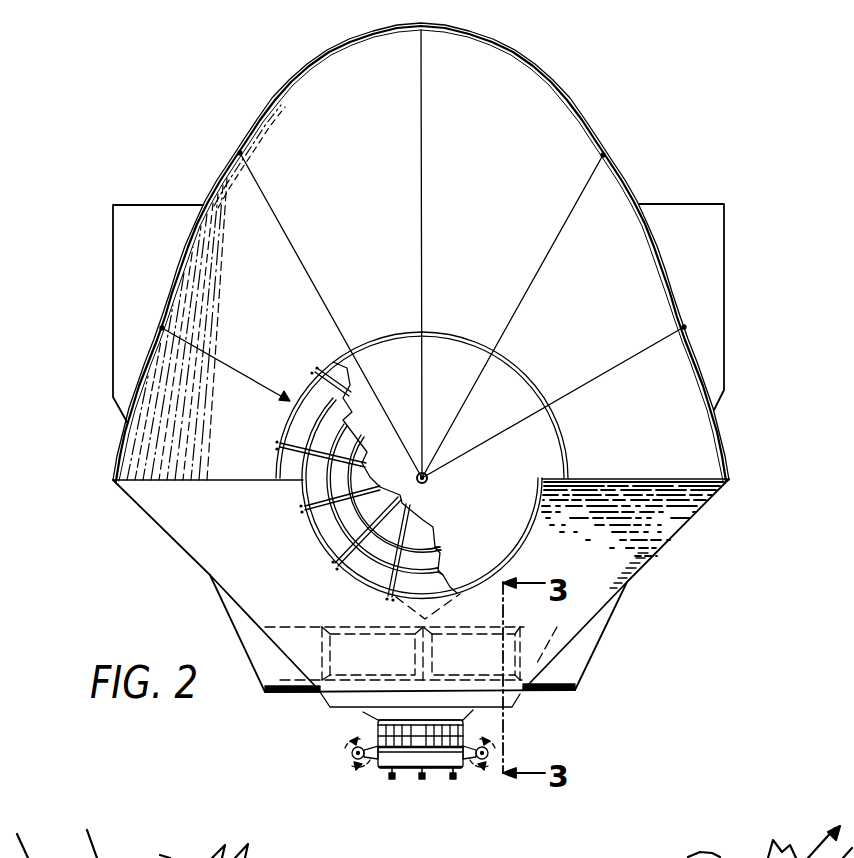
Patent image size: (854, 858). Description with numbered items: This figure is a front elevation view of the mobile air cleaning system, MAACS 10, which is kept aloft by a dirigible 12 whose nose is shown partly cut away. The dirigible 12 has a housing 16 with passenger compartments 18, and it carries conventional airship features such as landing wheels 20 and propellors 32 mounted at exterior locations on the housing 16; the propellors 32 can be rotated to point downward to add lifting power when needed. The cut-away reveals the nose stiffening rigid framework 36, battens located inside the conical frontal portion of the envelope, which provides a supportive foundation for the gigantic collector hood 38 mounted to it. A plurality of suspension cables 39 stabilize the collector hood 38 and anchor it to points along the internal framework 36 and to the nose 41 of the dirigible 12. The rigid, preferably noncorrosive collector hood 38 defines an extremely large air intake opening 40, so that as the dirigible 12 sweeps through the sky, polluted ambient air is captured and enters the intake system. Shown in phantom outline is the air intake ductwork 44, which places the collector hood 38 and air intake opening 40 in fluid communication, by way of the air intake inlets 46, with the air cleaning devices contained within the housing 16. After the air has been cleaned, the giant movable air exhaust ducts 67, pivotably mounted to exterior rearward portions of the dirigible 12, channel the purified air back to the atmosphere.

The MAACS 10 is at (134, 526).
The dirigible 12 is at (540, 446).
The housing 16 is at (363, 712).
The passenger compartments 18 is at (430, 797).
The landing wheels 20 is at (422, 785).
The propellors 32 is at (350, 758).
The nose stiffening rigid framework 36 is at (300, 437).
The collector hood 38 is at (326, 52).
The suspension cables 39 is at (238, 370).
The air intake opening 40 is at (508, 110).
The nose 41 is at (430, 479).
The air intake ductwork 44 is at (315, 704).
The air intake inlets 46 is at (348, 660).
The air exhaust ducts 67 is at (130, 246).